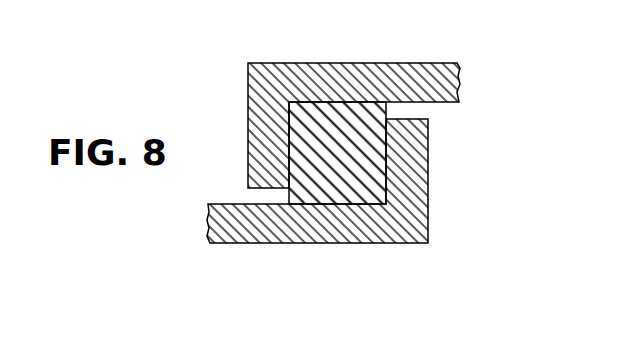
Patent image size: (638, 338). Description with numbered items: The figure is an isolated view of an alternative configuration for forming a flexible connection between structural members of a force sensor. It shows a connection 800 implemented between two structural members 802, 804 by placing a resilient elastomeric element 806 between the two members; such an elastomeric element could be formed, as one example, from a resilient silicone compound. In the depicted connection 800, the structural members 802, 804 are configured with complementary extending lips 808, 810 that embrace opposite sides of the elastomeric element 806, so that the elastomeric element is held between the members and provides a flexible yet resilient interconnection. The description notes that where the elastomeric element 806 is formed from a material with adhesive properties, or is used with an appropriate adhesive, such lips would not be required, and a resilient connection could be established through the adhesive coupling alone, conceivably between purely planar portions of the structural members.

The connection 800 is at (441, 152).
The structural member 802 is at (420, 63).
The structural member 804 is at (430, 226).
The resilient elastomeric element 806 is at (388, 181).
The extending lip 808 is at (430, 170).
The extending lip 810 is at (245, 138).